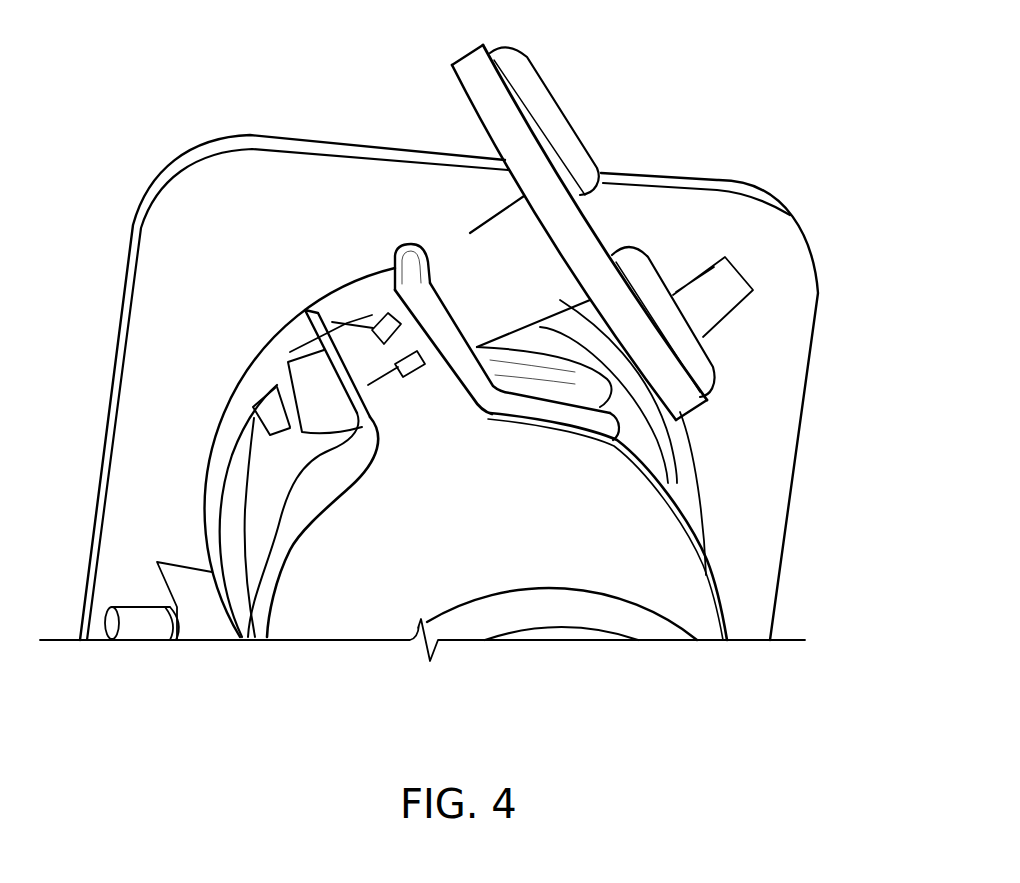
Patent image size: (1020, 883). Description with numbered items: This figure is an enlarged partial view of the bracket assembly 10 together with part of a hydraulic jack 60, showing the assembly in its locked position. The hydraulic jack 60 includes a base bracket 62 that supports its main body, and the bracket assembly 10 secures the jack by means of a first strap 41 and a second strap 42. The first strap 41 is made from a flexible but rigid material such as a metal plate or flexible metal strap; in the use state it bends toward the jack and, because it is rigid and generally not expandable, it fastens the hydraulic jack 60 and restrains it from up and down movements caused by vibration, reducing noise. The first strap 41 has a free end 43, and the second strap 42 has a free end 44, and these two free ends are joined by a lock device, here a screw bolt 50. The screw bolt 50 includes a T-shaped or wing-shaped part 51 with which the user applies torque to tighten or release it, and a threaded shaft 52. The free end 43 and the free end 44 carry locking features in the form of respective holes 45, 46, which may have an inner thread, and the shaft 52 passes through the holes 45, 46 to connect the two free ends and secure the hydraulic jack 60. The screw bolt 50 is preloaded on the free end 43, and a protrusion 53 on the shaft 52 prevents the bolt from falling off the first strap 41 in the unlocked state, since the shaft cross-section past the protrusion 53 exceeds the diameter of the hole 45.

The bracket assembly 10 is at (729, 58).
The first strap 41 is at (673, 490).
The second strap 42 is at (317, 481).
The free end 43 is at (476, 398).
The free end 44 is at (380, 410).
The hole 45 is at (412, 261).
The hole 46 is at (366, 388).
The screw bolt 50 is at (477, 82).
The wing-shaped part 51 is at (538, 103).
The shaft 52 is at (306, 310).
The protrusion 53 is at (385, 326).
The hydraulic jack 60 is at (673, 573).
The base bracket 62 is at (770, 190).